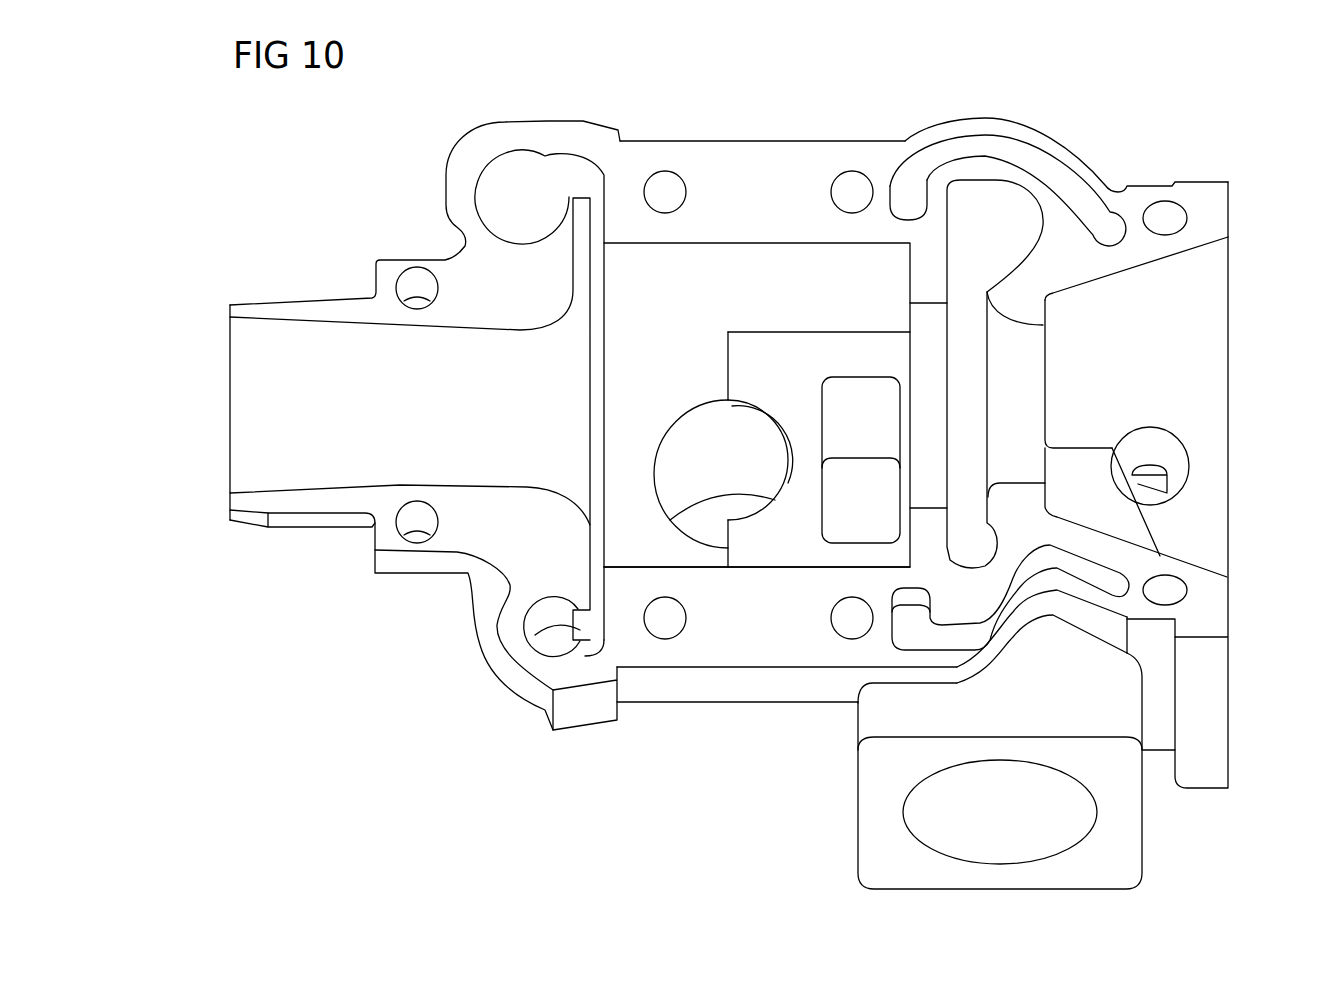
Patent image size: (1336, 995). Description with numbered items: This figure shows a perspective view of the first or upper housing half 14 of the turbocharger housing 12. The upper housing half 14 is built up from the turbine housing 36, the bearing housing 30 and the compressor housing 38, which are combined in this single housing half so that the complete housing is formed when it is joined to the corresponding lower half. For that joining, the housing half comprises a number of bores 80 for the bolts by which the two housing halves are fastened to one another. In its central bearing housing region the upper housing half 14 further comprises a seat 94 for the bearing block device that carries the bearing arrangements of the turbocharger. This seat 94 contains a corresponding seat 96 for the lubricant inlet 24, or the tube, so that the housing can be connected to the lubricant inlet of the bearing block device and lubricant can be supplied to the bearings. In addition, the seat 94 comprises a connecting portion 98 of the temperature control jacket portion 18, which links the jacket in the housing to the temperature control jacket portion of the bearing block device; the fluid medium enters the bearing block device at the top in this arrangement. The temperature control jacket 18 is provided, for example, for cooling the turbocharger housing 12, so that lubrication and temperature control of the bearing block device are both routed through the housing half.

The turbocharger housing 12 is at (1163, 172).
The upper housing half 14 is at (1244, 678).
The temperature control jacket portion 18 is at (1060, 178).
The lubricant inlet 24 is at (690, 472).
The bearing housing 30 is at (762, 128).
The turbine housing 36 is at (1033, 118).
The compressor housing 38 is at (587, 112).
The bores 80 is at (428, 291).
The seat for the bearing block device 94 is at (766, 570).
The seat for the lubricant inlet 96 is at (779, 406).
The connecting portion 98 is at (890, 480).